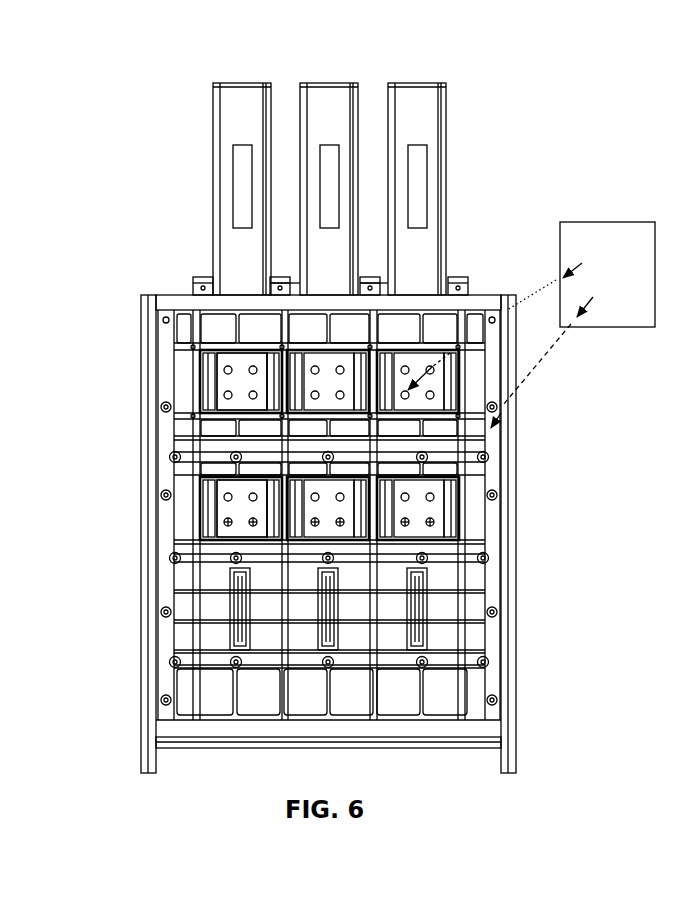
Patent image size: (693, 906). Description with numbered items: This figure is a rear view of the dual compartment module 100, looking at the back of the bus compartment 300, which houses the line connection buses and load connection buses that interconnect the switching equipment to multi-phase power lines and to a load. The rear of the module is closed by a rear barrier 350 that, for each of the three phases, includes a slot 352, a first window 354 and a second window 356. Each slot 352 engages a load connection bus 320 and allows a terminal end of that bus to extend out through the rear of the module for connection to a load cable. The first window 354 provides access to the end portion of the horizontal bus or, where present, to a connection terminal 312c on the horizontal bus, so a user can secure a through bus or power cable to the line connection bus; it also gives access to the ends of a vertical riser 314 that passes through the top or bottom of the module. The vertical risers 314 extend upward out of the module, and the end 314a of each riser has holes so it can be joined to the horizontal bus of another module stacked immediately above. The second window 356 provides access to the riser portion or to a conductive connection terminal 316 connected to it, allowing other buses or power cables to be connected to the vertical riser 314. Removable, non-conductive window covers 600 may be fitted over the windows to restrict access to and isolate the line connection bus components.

The dual compartment module 100 is at (527, 83).
The bus compartment 300 is at (167, 287).
The vertical riser 314 is at (280, 83).
The end of vertical riser 314a is at (213, 117).
The conductive connection terminal 316 is at (237, 403).
The second window 356 is at (230, 377).
The first window 354 is at (230, 508).
The connection terminal 312c is at (238, 530).
The slot 352 is at (230, 597).
The load connection bus 320 is at (230, 653).
The rear barrier 350 is at (473, 683).
The window cover 600 is at (578, 222).